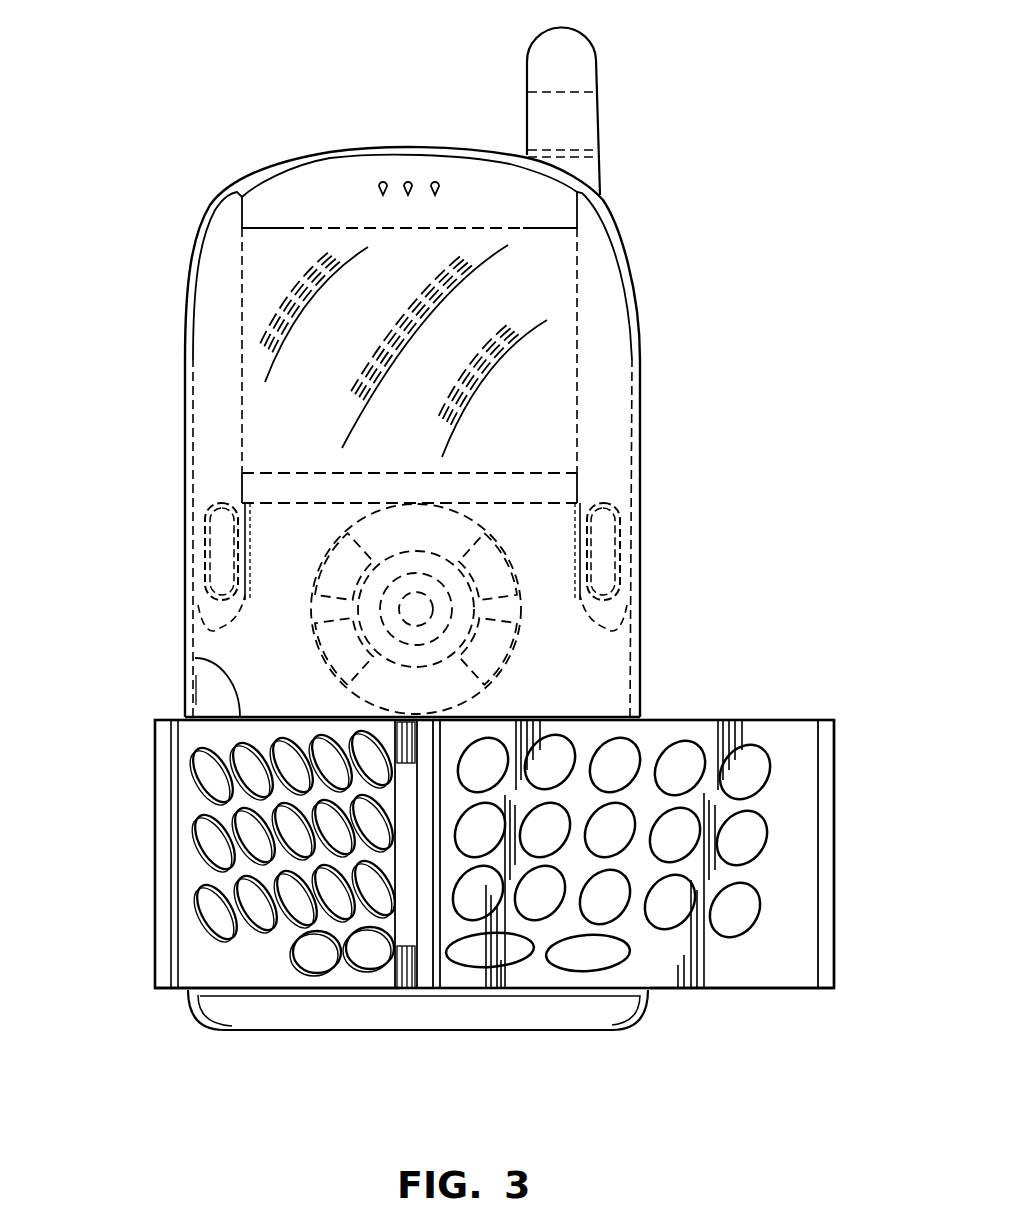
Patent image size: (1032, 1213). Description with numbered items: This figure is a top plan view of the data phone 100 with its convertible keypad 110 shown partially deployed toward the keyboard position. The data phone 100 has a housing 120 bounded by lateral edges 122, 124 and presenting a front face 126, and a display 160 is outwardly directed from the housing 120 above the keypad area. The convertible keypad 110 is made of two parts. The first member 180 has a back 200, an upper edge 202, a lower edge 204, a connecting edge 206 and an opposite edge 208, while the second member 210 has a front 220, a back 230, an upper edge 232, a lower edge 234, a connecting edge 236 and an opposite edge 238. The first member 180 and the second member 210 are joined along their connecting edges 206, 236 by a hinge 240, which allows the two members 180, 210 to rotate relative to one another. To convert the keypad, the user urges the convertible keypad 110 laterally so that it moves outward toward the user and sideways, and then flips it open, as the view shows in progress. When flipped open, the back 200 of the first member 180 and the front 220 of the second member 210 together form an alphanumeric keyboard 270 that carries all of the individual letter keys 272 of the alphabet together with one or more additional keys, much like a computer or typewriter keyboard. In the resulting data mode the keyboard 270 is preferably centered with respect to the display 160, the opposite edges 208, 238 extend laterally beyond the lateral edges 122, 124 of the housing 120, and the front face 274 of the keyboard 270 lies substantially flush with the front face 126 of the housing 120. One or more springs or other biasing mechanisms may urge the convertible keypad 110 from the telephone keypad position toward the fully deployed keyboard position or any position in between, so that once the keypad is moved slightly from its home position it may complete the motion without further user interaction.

The data phone 100 is at (663, 125).
The convertible keypad 110 is at (767, 642).
The housing 120 is at (253, 167).
The lateral edge 122 is at (185, 612).
The lateral edge 124 is at (643, 628).
The front face 126 is at (212, 688).
The display 160 is at (263, 301).
The first member 180 is at (158, 966).
The back 200 is at (205, 871).
The upper edge 202 is at (198, 657).
The lower edge 204 is at (282, 995).
The connecting edge 206 is at (490, 720).
The opposite edge 208 is at (155, 778).
The second member 210 is at (830, 949).
The front 220 is at (803, 913).
The back 230 is at (746, 990).
The upper edge 232 is at (723, 725).
The lower edge 234 is at (683, 988).
The connecting edge 236 is at (343, 727).
The opposite edge 238 is at (835, 740).
The hinge 240 is at (408, 977).
The alphanumeric keyboard 270 is at (841, 811).
The letter keys 272 is at (228, 926).
The front face 274 is at (592, 730).